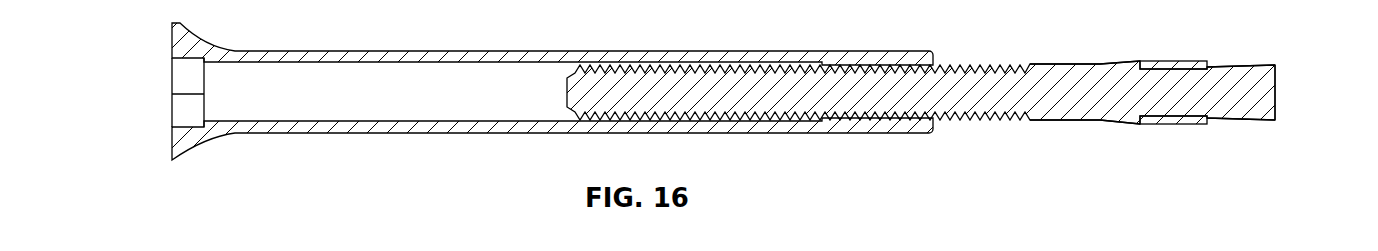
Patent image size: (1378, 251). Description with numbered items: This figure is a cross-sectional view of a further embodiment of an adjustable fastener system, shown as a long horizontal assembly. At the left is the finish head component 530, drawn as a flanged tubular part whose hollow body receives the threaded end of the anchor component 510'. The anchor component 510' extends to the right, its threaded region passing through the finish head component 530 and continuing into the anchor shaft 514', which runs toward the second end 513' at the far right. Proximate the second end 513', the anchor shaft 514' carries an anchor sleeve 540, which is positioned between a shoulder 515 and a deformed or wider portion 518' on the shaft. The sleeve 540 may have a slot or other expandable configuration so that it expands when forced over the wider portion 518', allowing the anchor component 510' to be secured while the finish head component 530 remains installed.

The finish head component 530 is at (382, 152).
The anchor component 510' is at (962, 101).
The anchor shaft 514' is at (1085, 62).
The shoulder 515 is at (1142, 61).
The anchor sleeve 540 is at (1160, 125).
The deformed or wider portion 518' is at (1233, 124).
The second end 513' is at (1316, 102).